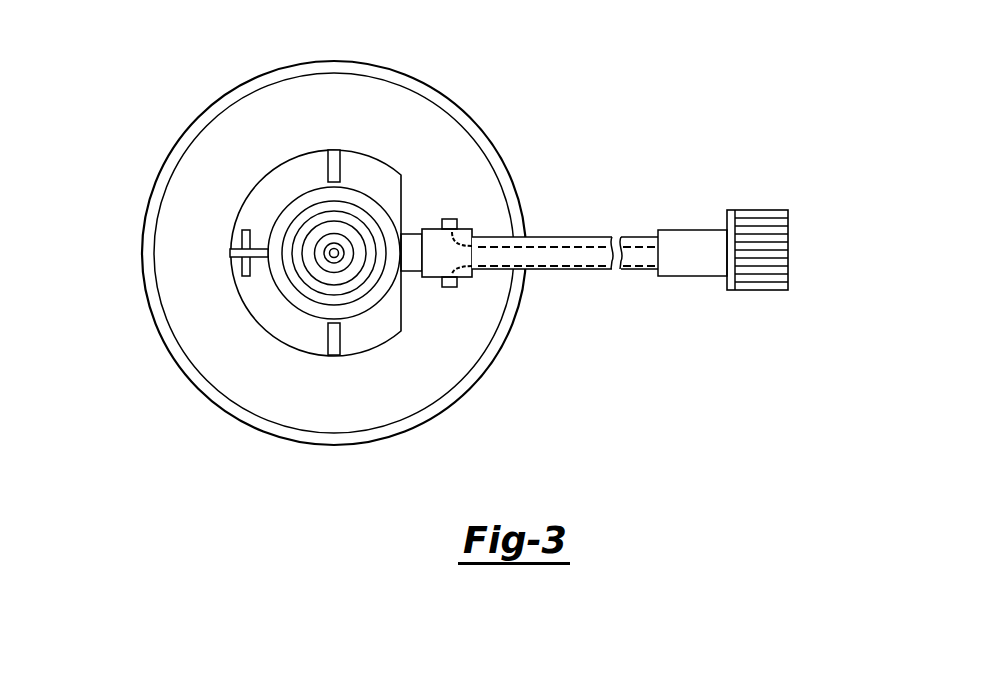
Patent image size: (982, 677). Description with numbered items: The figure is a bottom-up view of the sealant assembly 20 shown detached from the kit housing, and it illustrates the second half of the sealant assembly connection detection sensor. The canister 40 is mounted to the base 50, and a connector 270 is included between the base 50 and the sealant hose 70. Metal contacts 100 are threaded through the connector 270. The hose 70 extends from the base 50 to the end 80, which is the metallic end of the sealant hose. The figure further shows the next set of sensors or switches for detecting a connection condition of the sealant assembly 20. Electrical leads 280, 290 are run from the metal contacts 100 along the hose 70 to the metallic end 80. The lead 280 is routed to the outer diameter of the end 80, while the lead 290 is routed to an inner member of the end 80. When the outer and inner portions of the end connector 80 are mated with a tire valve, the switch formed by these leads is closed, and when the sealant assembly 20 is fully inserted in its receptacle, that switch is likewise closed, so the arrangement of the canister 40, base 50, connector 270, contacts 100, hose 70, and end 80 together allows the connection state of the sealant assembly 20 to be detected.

The sealant assembly 20 is at (97, 65).
The canister 40 is at (203, 185).
The base 50 is at (288, 190).
The metal contacts 100 is at (451, 219).
The sealant hose 70 is at (560, 240).
The end 80 is at (763, 260).
The connector 270 is at (462, 237).
The electrical lead 280 is at (551, 242).
The electrical lead 290 is at (566, 268).